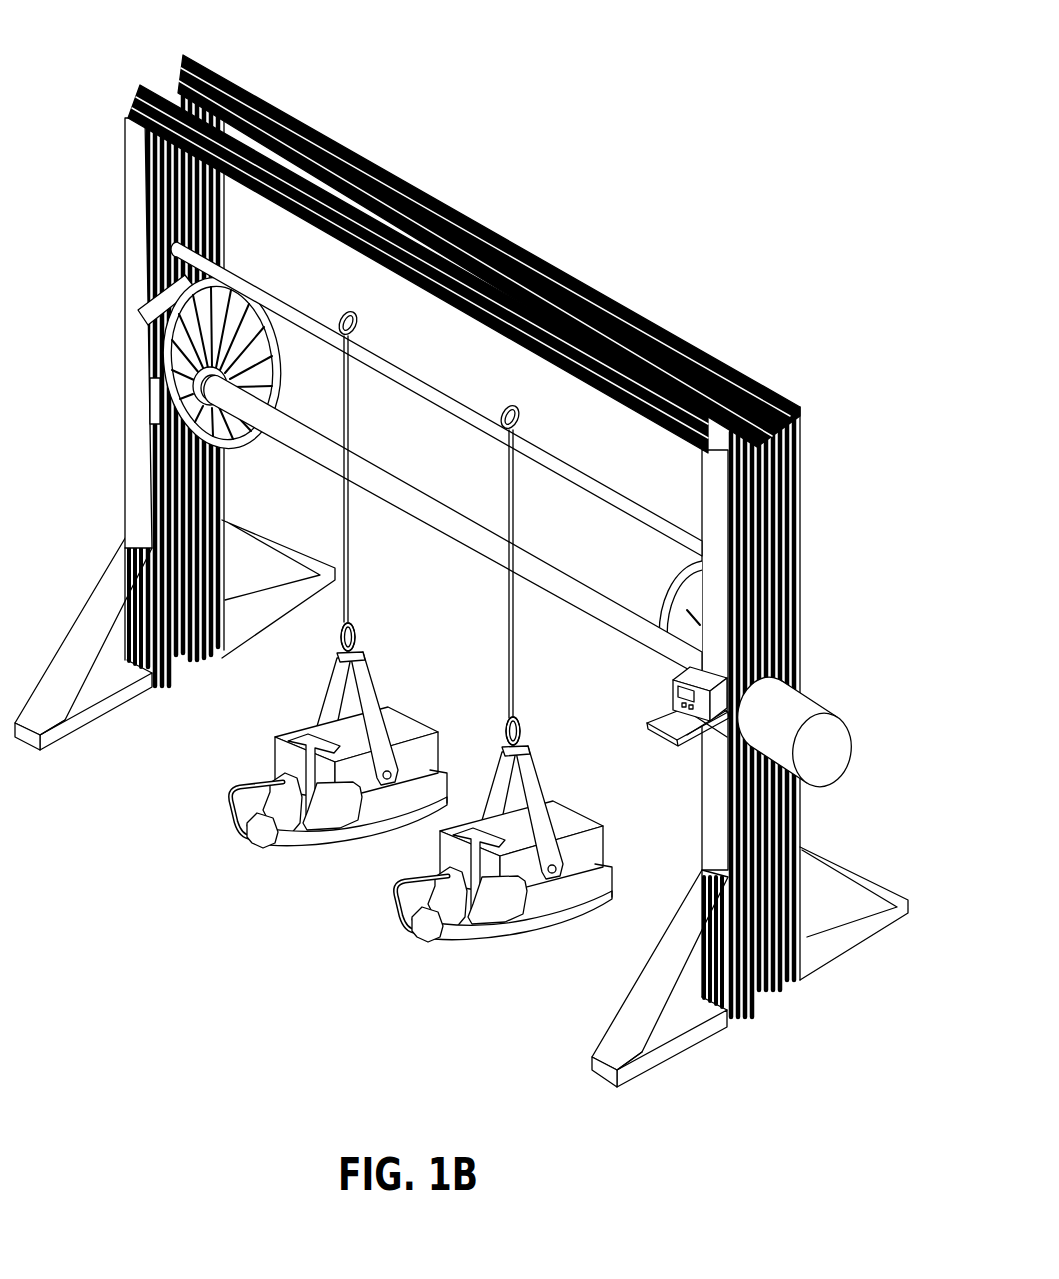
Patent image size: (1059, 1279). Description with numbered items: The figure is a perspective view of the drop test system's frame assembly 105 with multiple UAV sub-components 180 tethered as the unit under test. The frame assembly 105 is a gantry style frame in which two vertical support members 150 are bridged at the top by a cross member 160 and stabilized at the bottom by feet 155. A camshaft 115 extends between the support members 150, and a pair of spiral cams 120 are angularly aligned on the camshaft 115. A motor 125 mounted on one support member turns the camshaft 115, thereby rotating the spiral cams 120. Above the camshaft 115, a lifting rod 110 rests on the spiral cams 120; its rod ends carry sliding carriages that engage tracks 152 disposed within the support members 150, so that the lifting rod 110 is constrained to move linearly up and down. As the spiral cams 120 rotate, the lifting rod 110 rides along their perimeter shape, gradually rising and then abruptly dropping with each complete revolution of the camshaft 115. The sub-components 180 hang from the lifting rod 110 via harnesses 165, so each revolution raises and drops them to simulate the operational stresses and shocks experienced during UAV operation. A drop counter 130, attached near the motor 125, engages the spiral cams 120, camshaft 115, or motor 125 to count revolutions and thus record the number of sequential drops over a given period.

The frame assembly 105 is at (458, 570).
The lifting rod 110 is at (418, 385).
The camshaft 115 is at (474, 543).
The spiral cams 120 is at (147, 302).
The motor 125 is at (792, 735).
The drop counter 130 is at (676, 696).
The support members 150 is at (457, 556).
The tracks 152 is at (222, 231).
The feet 155 is at (72, 565).
The cross member 160 is at (472, 198).
The harnesses 165 is at (337, 624).
The sub-components 180 is at (270, 886).